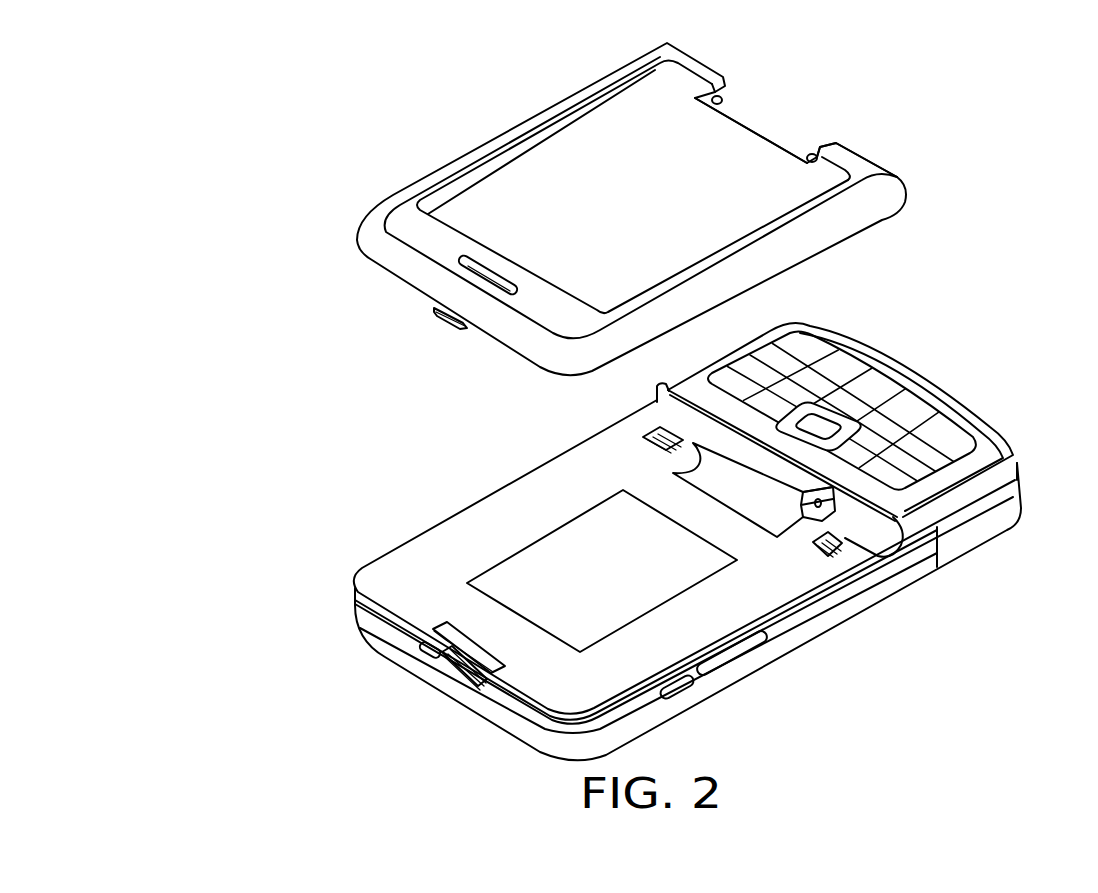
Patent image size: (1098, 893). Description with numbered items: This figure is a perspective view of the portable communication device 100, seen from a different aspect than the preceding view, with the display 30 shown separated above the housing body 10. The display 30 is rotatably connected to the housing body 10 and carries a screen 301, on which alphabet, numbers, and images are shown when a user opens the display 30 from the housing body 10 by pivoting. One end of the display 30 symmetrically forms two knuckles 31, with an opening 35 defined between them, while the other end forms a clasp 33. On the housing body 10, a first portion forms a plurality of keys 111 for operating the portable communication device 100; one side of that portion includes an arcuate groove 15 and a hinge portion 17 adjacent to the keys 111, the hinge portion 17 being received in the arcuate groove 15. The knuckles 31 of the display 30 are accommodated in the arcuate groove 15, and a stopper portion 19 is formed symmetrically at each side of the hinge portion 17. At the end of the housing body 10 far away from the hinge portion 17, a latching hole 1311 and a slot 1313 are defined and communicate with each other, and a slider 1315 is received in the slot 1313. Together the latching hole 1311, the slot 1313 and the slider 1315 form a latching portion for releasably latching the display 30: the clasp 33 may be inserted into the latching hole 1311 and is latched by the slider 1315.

The portable communication device 100 is at (268, 82).
The display 30 is at (320, 243).
The knuckles 31 is at (867, 168).
The opening 35 is at (778, 128).
The screen 301 is at (773, 195).
The clasp 33 is at (447, 318).
The housing body 10 is at (388, 510).
The keys 111 is at (963, 435).
The arcuate groove 15 is at (937, 522).
The hinge portion 17 is at (763, 460).
The stopper portion 19 is at (877, 530).
The latching hole 1311 is at (437, 628).
The slot 1313 is at (462, 682).
The slider 1315 is at (448, 665).